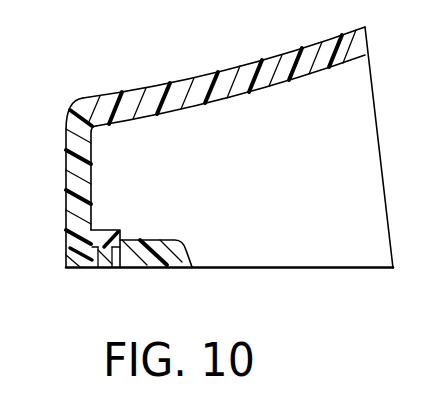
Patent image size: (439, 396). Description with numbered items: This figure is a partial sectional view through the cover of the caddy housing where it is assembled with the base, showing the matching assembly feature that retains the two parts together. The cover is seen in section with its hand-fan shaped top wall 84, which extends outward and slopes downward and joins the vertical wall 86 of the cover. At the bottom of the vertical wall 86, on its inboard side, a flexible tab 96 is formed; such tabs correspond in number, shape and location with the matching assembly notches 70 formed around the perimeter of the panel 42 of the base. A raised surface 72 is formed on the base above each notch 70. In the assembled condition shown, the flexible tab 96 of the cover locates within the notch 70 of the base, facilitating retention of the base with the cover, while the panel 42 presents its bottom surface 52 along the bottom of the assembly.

The top wall 84 is at (225, 82).
The vertical wall 86 is at (72, 178).
The raised surface 72 is at (103, 230).
The matching assembly notch 70 is at (87, 266).
The flexible tab 96 is at (97, 264).
The bottom surface 52 is at (147, 267).
The panel 42 is at (183, 267).